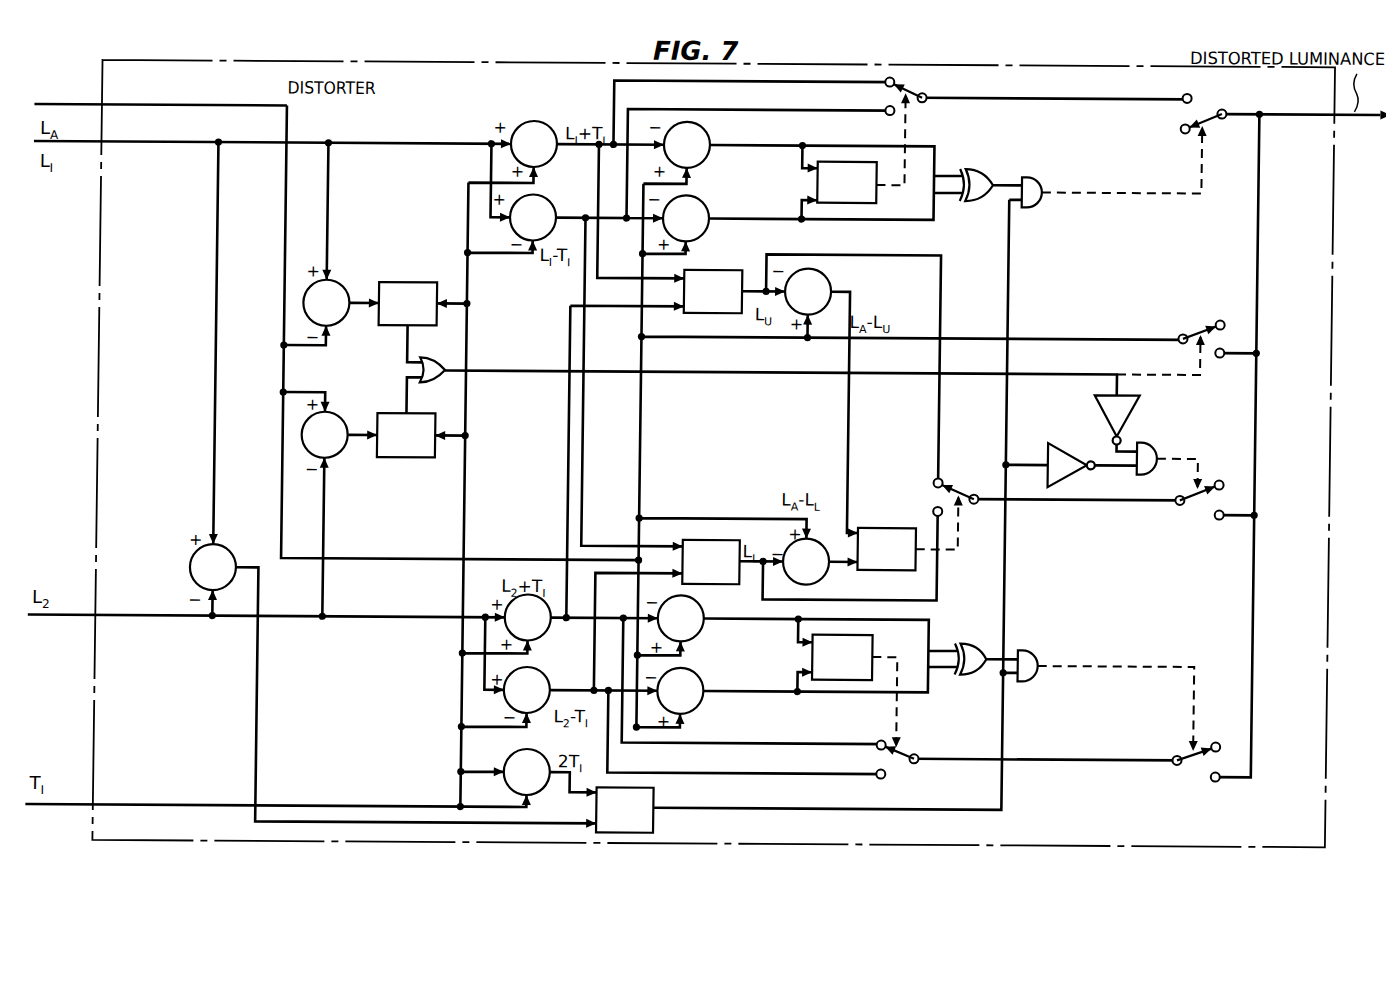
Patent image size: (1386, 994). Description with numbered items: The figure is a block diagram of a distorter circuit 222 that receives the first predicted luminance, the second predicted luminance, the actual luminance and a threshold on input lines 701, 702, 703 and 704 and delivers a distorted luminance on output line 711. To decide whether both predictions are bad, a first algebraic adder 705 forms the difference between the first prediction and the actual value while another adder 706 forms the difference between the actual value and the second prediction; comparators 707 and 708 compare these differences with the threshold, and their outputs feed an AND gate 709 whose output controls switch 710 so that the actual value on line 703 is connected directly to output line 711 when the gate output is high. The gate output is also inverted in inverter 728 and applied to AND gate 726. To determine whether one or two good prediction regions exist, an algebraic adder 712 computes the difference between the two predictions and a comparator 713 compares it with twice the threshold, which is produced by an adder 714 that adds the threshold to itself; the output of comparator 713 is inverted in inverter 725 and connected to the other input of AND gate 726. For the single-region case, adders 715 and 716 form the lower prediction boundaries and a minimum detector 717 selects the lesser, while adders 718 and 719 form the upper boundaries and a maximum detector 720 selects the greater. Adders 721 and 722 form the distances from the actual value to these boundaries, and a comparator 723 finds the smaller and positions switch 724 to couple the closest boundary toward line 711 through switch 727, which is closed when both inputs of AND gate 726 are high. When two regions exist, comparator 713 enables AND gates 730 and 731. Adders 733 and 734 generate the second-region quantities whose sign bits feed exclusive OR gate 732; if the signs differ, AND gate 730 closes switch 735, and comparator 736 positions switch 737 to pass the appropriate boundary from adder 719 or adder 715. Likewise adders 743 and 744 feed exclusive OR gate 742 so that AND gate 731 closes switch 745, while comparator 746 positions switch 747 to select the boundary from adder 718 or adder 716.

The distorter 222 is at (94, 86).
The input line 701 is at (134, 145).
The input line 702 is at (123, 618).
The input line 703 is at (134, 108).
The input line 704 is at (142, 808).
The first algebraic adder 705 is at (339, 286).
The algebraic adder 706 is at (341, 416).
The comparator 707 is at (408, 284).
The comparator 708 is at (414, 415).
The AND gate 709 is at (436, 354).
The switch 710 is at (1200, 320).
The output line 711 is at (1299, 113).
The algebraic adder 712 is at (196, 565).
The comparator 713 is at (658, 824).
The adder 714 is at (519, 757).
The adder 715 is at (544, 675).
The adder 716 is at (542, 202).
The minimum detector 717 is at (701, 540).
The adder 718 is at (532, 122).
The adder 719 is at (516, 601).
The maximum detector 720 is at (728, 270).
The adder 721 is at (826, 577).
The adder 722 is at (825, 279).
The comparator 723 is at (882, 527).
The switch 724 is at (962, 487).
The inverter 725 is at (1044, 448).
The AND gate 726 is at (1155, 441).
The switch 727 is at (1198, 504).
The inverter 728 is at (1096, 407).
The AND gate 730 is at (1027, 648).
The AND gate 731 is at (1028, 174).
The exclusive OR gate 732 is at (970, 641).
The adder 733 is at (701, 711).
The adder 734 is at (701, 628).
The switch 735 is at (1196, 769).
The comparator 736 is at (870, 650).
The switch 737 is at (919, 763).
The exclusive OR gate 742 is at (973, 169).
The adder 743 is at (702, 132).
The adder 744 is at (704, 202).
The switch 745 is at (1193, 106).
The comparator 746 is at (873, 199).
The switch 747 is at (912, 93).